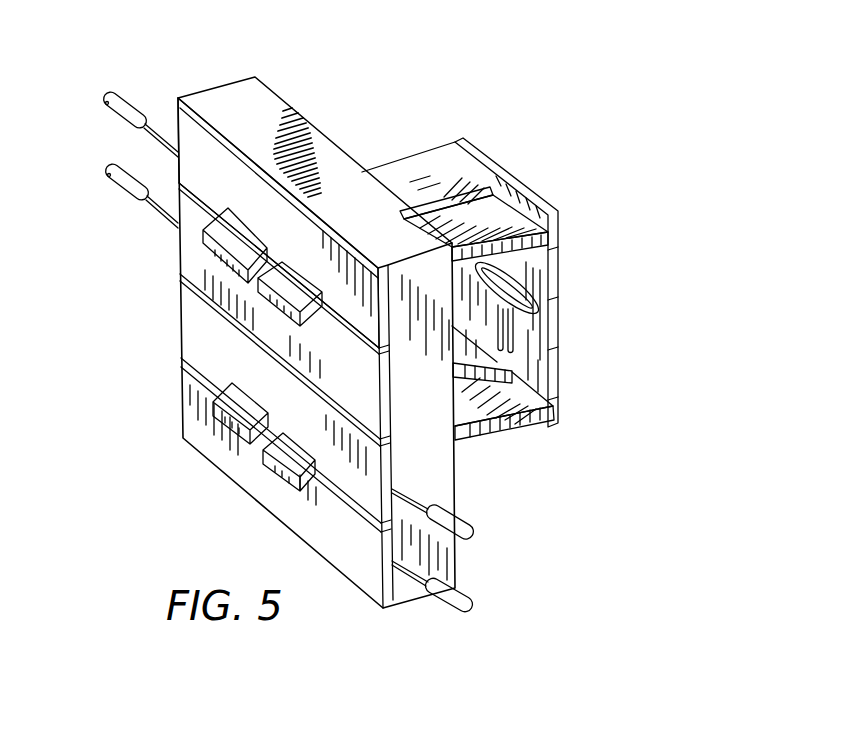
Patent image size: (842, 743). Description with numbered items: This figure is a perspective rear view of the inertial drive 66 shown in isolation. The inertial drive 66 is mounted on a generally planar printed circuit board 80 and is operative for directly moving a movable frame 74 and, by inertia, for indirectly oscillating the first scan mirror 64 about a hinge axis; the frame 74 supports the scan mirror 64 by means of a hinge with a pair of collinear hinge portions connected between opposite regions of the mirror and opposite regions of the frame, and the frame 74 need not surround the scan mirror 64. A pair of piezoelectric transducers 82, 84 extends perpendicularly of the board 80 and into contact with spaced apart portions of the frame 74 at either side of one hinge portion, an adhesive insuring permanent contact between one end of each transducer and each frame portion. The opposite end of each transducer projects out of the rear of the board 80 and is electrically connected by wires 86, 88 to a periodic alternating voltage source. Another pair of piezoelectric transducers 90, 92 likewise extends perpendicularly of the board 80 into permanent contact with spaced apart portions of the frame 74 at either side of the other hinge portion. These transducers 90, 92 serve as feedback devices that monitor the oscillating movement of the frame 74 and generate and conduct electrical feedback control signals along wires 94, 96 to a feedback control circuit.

The inertial drive 66 is at (502, 140).
The printed circuit board 80 is at (179, 97).
The piezoelectric transducer 84 is at (427, 172).
The piezoelectric transducer 82 is at (505, 218).
The movable frame 74 is at (530, 272).
The piezoelectric transducer 92 is at (462, 360).
The first scan mirror 64 is at (527, 400).
The piezoelectric transducer 90 is at (534, 403).
The wire 86 is at (131, 112).
The wire 88 is at (126, 166).
The wire 94 is at (473, 538).
The wire 96 is at (472, 610).